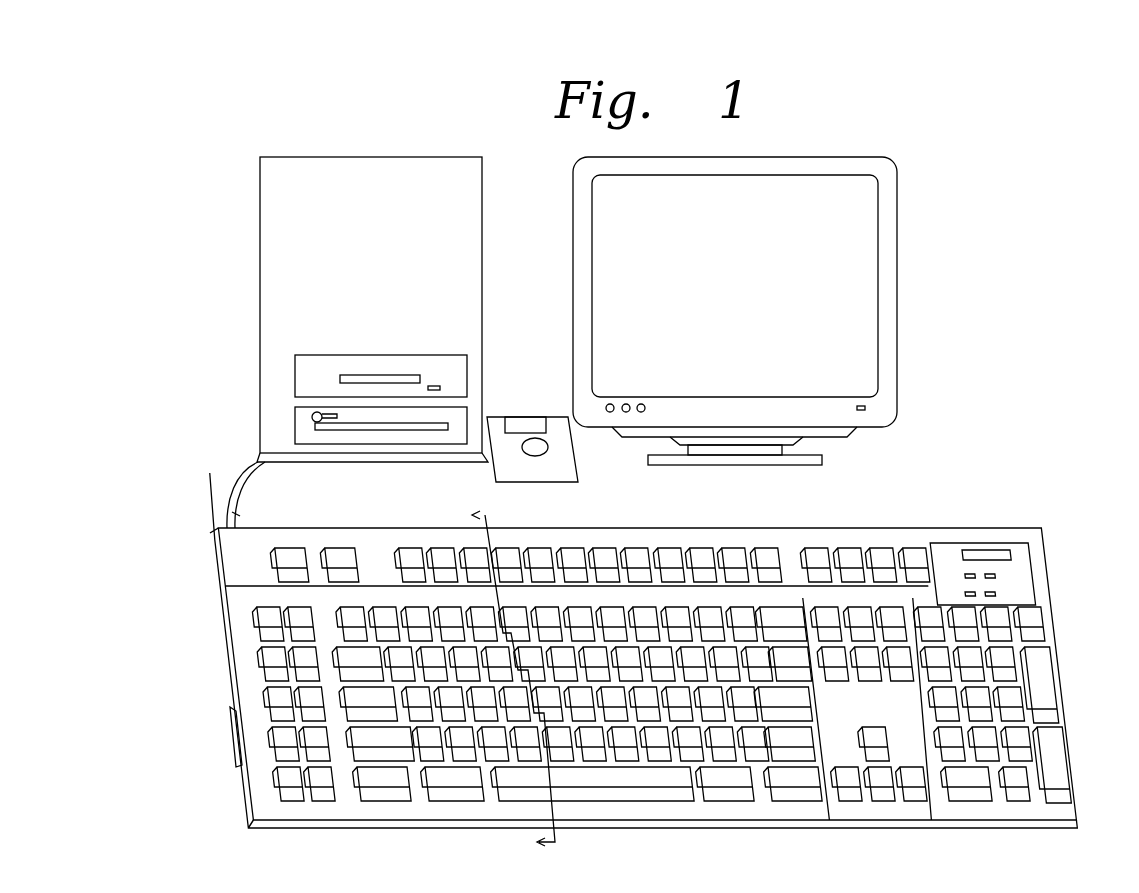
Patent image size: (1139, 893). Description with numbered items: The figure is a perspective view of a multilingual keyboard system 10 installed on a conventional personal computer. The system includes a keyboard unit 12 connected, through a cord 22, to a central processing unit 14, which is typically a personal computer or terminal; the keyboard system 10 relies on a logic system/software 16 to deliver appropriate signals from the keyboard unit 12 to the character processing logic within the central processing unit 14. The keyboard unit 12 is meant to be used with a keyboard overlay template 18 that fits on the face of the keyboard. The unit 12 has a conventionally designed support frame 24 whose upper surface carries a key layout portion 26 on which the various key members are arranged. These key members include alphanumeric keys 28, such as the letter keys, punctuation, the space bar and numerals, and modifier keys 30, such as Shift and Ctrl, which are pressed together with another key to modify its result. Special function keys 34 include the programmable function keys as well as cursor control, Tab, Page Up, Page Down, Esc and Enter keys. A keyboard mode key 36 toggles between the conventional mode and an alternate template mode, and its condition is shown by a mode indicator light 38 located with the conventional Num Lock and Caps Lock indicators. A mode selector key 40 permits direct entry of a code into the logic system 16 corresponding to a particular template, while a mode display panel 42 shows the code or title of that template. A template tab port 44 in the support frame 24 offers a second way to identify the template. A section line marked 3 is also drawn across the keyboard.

The section line 3 is at (504, 678).
The multilingual keyboard system 10 is at (992, 377).
The keyboard unit 12 is at (605, 513).
The central processing unit 14 is at (236, 199).
The logic system/software 16 is at (522, 395).
The keyboard overlay template 18 is at (235, 485).
The cord 22 is at (252, 471).
The support frame 24 is at (866, 543).
The key layout portion 26 is at (219, 590).
The alphanumeric keys 28 is at (685, 750).
The modifier keys 30 is at (767, 750).
The special function keys 34 is at (924, 605).
The keyboard mode key 36 is at (922, 544).
The mode indicator light 38 is at (1025, 552).
The mode selector key 40 is at (277, 528).
The mode display panel 42 is at (1014, 553).
The template tab port 44 is at (233, 762).